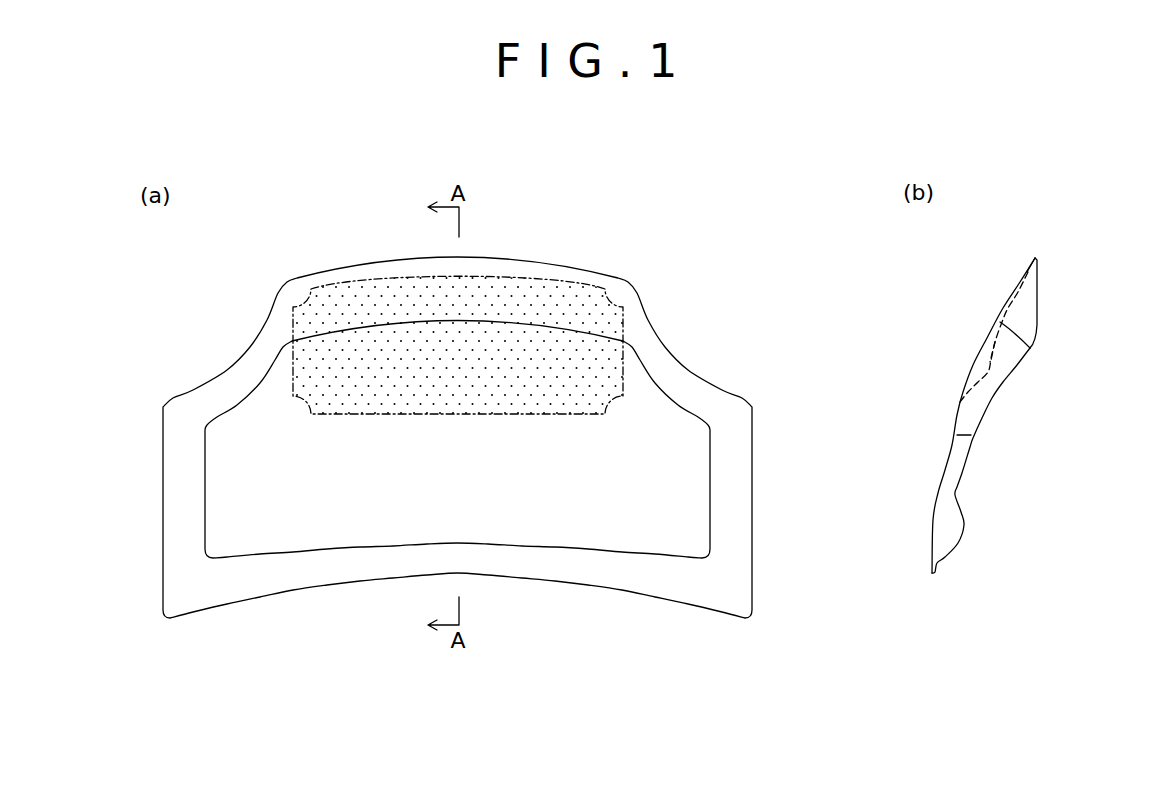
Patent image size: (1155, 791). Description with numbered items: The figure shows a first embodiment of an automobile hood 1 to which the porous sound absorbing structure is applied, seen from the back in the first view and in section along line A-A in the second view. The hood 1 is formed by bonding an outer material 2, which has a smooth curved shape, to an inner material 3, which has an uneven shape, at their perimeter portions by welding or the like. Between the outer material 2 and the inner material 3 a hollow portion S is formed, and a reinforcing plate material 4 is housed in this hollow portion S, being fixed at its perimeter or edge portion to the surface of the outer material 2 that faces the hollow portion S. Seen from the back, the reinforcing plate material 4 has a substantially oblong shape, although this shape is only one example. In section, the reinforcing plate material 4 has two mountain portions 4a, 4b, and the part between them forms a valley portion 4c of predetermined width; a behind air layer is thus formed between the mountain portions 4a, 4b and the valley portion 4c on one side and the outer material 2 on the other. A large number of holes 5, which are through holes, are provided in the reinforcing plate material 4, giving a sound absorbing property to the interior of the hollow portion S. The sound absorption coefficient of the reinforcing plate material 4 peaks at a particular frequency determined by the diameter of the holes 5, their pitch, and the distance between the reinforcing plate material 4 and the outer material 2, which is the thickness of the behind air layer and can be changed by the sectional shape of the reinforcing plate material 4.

The hood 1 is at (713, 225).
The outer material 2 is at (702, 373).
The inner material 3 is at (637, 573).
The reinforcing plate material 4 is at (630, 300).
The mountain portion 4a is at (1013, 295).
The mountain portion 4b is at (1000, 368).
The valley portion 4c is at (1007, 310).
The holes 5 is at (555, 298).
The hollow portion S is at (964, 420).